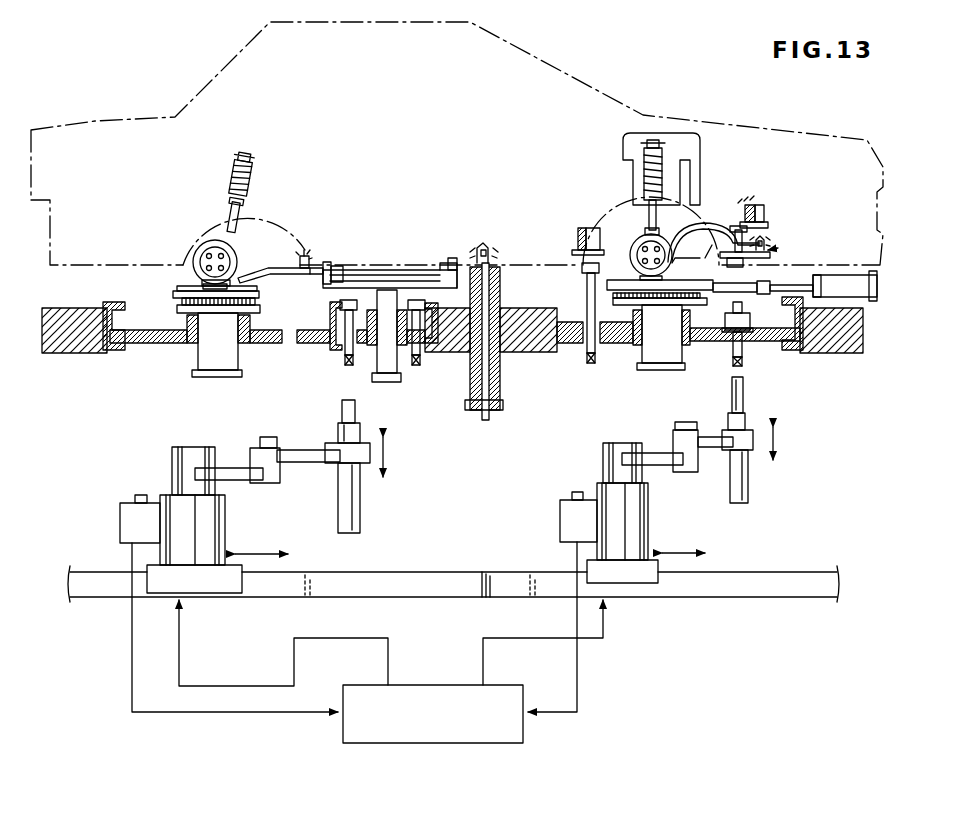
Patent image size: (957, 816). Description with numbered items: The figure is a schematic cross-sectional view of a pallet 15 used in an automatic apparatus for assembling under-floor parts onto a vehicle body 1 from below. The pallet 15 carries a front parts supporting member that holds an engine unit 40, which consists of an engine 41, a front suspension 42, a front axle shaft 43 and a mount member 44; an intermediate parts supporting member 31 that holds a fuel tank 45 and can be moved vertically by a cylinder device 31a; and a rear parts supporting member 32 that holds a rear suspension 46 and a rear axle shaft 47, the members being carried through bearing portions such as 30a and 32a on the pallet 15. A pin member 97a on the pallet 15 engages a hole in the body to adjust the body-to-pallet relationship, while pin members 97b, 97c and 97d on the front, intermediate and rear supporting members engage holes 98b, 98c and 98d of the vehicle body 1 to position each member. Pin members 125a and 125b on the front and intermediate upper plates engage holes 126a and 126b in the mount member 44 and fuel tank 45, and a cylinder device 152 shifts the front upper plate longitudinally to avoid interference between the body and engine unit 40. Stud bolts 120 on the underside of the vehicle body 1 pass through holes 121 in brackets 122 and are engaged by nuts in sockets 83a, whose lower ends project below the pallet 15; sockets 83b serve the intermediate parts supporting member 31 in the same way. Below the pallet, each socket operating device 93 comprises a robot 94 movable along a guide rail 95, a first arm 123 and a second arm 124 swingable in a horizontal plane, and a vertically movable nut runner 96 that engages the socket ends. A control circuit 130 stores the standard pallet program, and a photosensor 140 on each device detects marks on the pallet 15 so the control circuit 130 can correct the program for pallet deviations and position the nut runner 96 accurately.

The vehicle body 1 is at (577, 80).
The pallet 15 is at (68, 355).
The bracket 30a is at (794, 352).
The intermediate parts supporting member 31 is at (390, 383).
The cylinder device 31a is at (445, 268).
The rear parts supporting member 32 is at (216, 372).
The bearing bracket 32a is at (122, 355).
The engine unit 40 is at (702, 165).
The engine 41 is at (682, 148).
The front suspension 42 is at (653, 138).
The front axle shaft 43 is at (622, 268).
The mount member 44 is at (752, 236).
The fuel tank 45 is at (399, 270).
The rear suspension 46 is at (248, 180).
The rear axle shaft 47 is at (236, 258).
The sockets 83a is at (598, 368).
The sockets 83b is at (343, 365).
The socket operating device 93 is at (170, 492).
The robot 94 is at (225, 522).
The guide rail 95 is at (440, 572).
The nut runner 96 is at (368, 432).
The pin member 97a is at (488, 362).
The pin member 97b is at (770, 246).
The pin member 97c is at (458, 265).
The pin member 97d is at (323, 262).
The hole 98b is at (880, 256).
The hole 98c is at (492, 253).
The hole 98d is at (303, 250).
The stud bolts 120 is at (580, 250).
The holes 121 is at (582, 226).
The brackets 122 is at (592, 240).
The first arm 123 is at (235, 468).
The second arm 124 is at (296, 450).
The pin member 125a is at (675, 220).
The pin member 125b is at (340, 268).
The hole 126a is at (690, 222).
The hole 126b is at (332, 262).
The control circuit 130 is at (440, 685).
The photosensor 140 is at (118, 520).
The cylinder device 152 is at (880, 290).